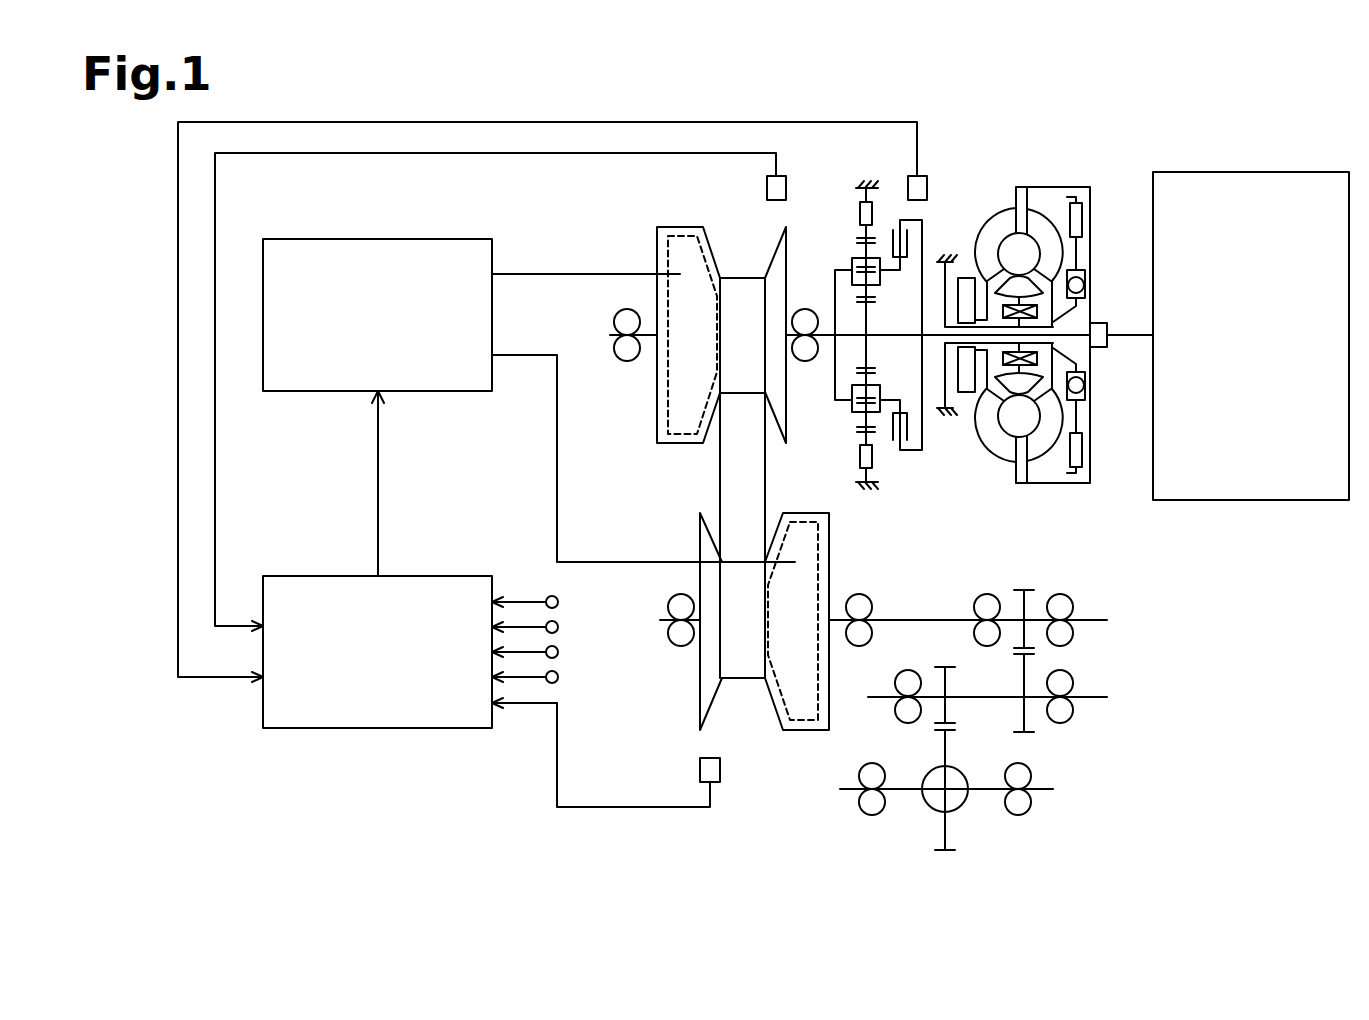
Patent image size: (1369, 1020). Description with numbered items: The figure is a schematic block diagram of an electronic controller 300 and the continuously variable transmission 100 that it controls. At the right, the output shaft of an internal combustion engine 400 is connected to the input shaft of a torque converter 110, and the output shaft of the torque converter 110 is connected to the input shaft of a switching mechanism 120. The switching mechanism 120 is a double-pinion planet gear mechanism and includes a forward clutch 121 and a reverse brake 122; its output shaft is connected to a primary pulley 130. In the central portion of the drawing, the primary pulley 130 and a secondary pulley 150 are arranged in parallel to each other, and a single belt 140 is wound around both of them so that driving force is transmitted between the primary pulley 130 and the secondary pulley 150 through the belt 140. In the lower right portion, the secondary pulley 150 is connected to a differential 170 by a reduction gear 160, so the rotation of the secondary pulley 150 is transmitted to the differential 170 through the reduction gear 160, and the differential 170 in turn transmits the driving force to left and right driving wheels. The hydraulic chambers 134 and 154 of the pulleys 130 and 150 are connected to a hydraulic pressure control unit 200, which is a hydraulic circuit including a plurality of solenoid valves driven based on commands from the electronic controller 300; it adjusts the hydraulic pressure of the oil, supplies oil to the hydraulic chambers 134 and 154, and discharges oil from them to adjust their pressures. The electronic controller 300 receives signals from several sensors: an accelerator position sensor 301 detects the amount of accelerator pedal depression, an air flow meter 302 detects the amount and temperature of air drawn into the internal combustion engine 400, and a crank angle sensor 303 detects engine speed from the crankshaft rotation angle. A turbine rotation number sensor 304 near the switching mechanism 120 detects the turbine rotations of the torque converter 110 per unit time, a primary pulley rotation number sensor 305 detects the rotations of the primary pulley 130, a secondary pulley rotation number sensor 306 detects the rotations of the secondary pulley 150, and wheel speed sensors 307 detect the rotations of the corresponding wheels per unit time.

The continuously variable transmission 100 is at (1148, 601).
The torque converter 110 is at (1055, 187).
The switching mechanism 120 is at (925, 236).
The forward clutch 121 is at (892, 437).
The reverse brake 122 is at (858, 456).
The primary pulley 130 is at (680, 227).
The hydraulic chamber 134 is at (680, 398).
The belt 140 is at (720, 483).
The secondary pulley 150 is at (800, 730).
The hydraulic chamber 154 is at (810, 583).
The reduction gear 160 is at (1033, 698).
The differential 170 is at (992, 843).
The hydraulic pressure control unit 200 is at (443, 239).
The electronic controller 300 is at (443, 576).
The accelerator position sensor 301 is at (558, 602).
The air flow meter 302 is at (558, 627).
The crank angle sensor 303 is at (558, 652).
The turbine rotation number sensor 304 is at (929, 186).
The primary pulley rotation number sensor 305 is at (788, 186).
The secondary pulley rotation number sensor 306 is at (698, 770).
The wheel speed sensors 307 is at (558, 677).
The internal combustion engine 400 is at (1216, 172).